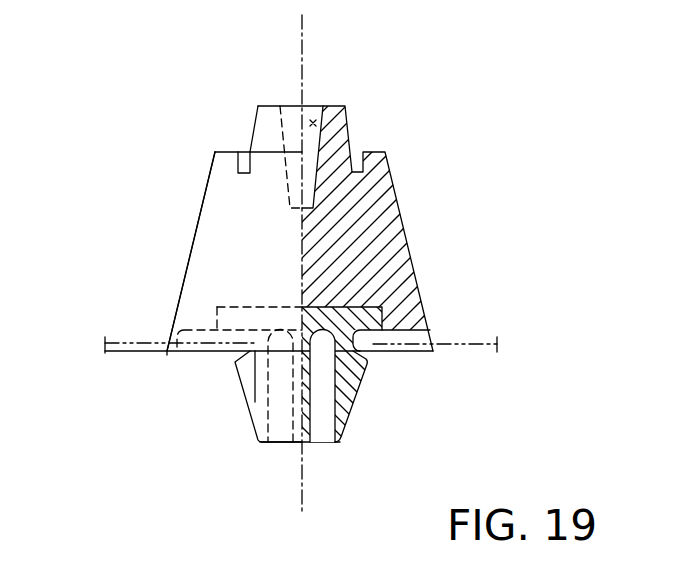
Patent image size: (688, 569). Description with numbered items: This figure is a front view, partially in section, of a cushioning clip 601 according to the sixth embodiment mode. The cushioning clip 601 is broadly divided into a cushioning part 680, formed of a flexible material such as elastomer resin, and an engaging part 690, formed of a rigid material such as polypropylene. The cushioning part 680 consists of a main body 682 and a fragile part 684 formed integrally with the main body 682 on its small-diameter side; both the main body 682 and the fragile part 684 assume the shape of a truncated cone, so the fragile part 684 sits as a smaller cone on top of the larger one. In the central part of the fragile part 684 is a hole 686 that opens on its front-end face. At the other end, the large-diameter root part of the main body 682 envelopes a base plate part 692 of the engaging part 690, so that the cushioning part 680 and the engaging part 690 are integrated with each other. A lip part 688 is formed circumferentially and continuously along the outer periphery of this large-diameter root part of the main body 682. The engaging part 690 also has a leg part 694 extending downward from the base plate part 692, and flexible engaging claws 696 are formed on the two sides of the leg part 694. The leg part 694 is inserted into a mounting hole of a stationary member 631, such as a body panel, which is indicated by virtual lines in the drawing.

The cushioning clip 601 is at (430, 213).
The stationary member 631 is at (128, 347).
The cushioning part 680 is at (438, 148).
The main body 682 is at (225, 215).
The fragile part 684 is at (345, 121).
The hole 686 is at (315, 120).
The lip part 688 is at (433, 330).
The engaging part 690 is at (218, 405).
The base plate part 692 is at (372, 292).
The leg part 694 is at (277, 422).
The flexible engaging claws 696 is at (235, 362).